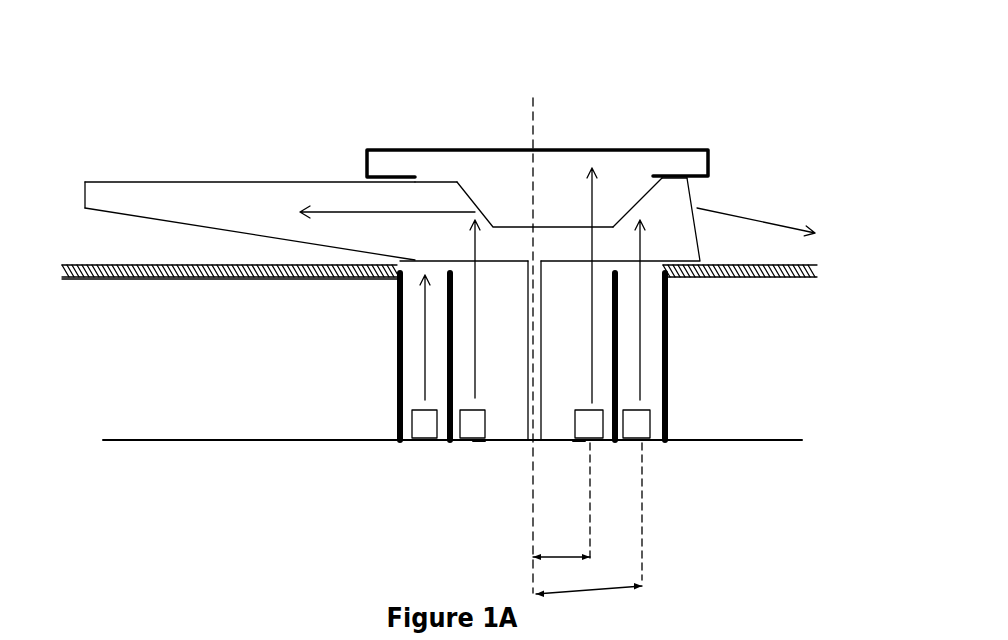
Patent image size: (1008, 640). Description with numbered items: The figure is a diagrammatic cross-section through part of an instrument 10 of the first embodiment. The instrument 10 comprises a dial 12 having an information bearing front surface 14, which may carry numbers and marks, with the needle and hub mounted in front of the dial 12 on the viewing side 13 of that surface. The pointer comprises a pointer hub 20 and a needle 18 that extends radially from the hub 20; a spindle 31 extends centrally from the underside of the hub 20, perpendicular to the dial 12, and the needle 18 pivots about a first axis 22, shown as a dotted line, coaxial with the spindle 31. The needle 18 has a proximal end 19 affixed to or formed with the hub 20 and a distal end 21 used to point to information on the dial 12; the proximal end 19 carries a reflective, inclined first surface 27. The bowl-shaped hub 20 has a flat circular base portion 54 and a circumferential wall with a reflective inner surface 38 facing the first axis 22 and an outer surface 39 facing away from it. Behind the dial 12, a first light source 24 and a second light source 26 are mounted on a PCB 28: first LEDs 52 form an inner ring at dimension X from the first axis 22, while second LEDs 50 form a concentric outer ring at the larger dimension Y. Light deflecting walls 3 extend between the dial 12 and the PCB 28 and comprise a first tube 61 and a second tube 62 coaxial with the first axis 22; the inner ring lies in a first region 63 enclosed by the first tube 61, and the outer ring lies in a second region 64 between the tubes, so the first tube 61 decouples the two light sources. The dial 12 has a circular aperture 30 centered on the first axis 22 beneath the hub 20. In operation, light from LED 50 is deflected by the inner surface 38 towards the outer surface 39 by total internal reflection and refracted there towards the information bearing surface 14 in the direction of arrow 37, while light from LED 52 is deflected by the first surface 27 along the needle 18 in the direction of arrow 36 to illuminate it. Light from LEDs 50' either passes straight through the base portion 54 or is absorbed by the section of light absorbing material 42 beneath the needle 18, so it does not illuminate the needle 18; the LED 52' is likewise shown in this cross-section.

The instrument 10 is at (790, 67).
The dial 12 is at (198, 279).
The viewing side 13 is at (792, 258).
The information bearing front surface 14 is at (105, 263).
The needle 18 is at (198, 196).
The proximal end 19 is at (425, 193).
The pointer hub 20 is at (706, 239).
The distal end 21 is at (98, 195).
The first axis 22 is at (537, 117).
The first light source 24 is at (582, 452).
The second light source 26 is at (403, 446).
The first surface 27 is at (463, 187).
The PCB 28 is at (293, 440).
The aperture 30 is at (565, 272).
The spindle 31 is at (542, 364).
The arrow 36 is at (332, 212).
The arrow 37 is at (772, 225).
The inner surface 38 is at (647, 197).
The outer surface 39 is at (695, 198).
The light absorbing material 42 is at (397, 272).
The light deflecting walls 3 is at (450, 357).
The second LED 50 is at (657, 475).
The LED 50' is at (416, 464).
The first LED 52 is at (465, 466).
The right inner outlet 52' is at (602, 465).
The flat circular base portion 54 is at (513, 225).
The first tube 61 is at (450, 375).
The second tube 62 is at (668, 318).
The first region 63 is at (600, 386).
The second region 64 is at (652, 345).